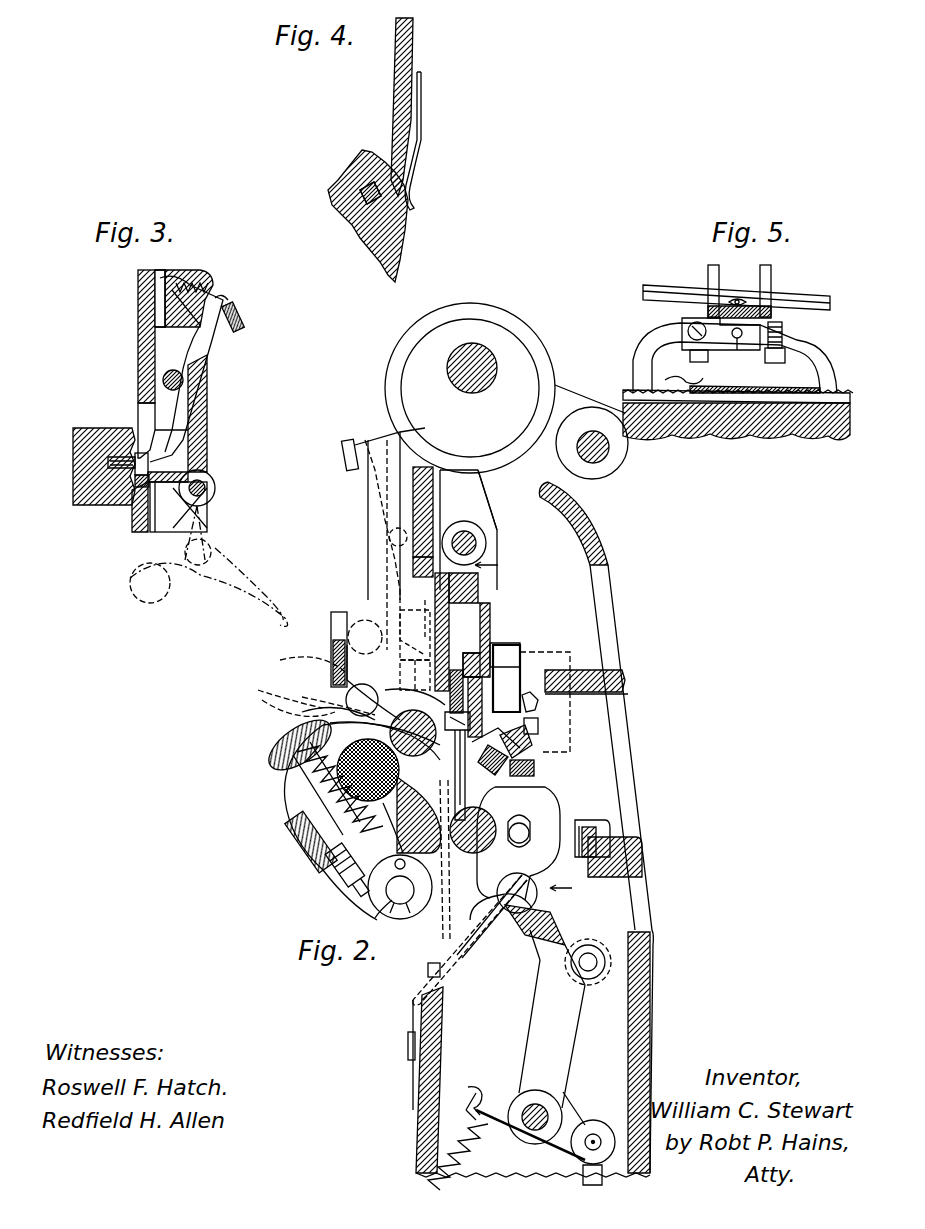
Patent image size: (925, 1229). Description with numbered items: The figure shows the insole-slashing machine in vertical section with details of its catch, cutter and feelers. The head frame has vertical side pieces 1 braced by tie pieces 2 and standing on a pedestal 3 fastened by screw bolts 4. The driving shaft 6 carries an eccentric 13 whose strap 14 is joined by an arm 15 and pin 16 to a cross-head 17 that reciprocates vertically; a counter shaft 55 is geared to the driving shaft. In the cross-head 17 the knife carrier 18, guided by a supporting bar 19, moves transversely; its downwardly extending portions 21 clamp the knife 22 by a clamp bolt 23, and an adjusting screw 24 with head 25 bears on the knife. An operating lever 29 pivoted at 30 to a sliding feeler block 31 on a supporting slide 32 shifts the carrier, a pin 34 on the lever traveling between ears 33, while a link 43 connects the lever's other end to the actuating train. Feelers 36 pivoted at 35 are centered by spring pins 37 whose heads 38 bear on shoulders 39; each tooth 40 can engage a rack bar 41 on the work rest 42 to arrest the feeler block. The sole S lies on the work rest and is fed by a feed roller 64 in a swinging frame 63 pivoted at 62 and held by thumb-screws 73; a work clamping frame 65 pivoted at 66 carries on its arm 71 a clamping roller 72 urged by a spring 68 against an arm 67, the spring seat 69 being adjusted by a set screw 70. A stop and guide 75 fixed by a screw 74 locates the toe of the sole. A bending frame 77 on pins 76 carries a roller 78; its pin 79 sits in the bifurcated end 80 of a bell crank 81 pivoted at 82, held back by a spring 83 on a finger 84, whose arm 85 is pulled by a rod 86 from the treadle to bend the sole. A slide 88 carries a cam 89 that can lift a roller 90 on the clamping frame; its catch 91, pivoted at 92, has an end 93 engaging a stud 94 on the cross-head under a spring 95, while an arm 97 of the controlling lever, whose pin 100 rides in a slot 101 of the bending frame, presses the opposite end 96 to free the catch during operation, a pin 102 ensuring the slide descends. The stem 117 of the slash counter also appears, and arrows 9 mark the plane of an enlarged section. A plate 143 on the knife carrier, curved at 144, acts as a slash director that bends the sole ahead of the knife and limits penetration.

In FIG. 2, the side pieces 1 is at (583, 612).
In FIG. 2, the tie pieces 2 is at (640, 700).
In FIG. 2, the pedestal 3 is at (650, 1035).
In FIG. 2, the screw bolts 4 is at (428, 972).
In FIG. 2, the main driving shaft 6 is at (472, 347).
In FIG. 2, the rollers 9 is at (531, 725).
In FIG. 2, the eccentric 13 is at (518, 355).
In FIG. 2, the eccentric strap 14 is at (548, 310).
In FIG. 2, the arm 15 is at (468, 530).
In FIG. 2, the pin 16 is at (476, 543).
In FIG. 3, the cross-head 17 is at (95, 505).
In FIG. 2, the cross-head 17 is at (455, 600).
In FIG. 2, the knife carrier 18 is at (470, 640).
In FIG. 2, the guiding and supporting bar 19 is at (475, 660).
In FIG. 2, the downwardly extending portions 21 is at (520, 650).
In FIG. 4, the knife 22 is at (396, 80).
In FIG. 2, the knife 22 is at (330, 726).
In FIG. 2, the clamp bolt 23 is at (531, 698).
In FIG. 2, the adjusting screw 24 is at (445, 718).
In FIG. 2, the head 25 is at (320, 694).
In FIG. 2, the operating lever 29 is at (605, 701).
In FIG. 2, the pivot 30 is at (534, 768).
In FIG. 5, the sliding feeler block 31 is at (732, 300).
In FIG. 2, the sliding feeler block 31 is at (508, 762).
In FIG. 5, the supporting slide 32 is at (805, 300).
In FIG. 2, the supporting slide 32 is at (532, 742).
In FIG. 5, the ears 33 is at (788, 262).
In FIG. 2, the ears 33 is at (538, 704).
In FIG. 2, the pin 34 is at (538, 726).
In FIG. 5, the pivotal connection 35 is at (737, 350).
In FIG. 5, the feelers 36 is at (845, 352).
In FIG. 5, the spring controlled pins 37 is at (782, 338).
In FIG. 5, the heads 38 is at (835, 312).
In FIG. 5, the shoulders 39 is at (688, 331).
In FIG. 5, the tooth 40 is at (633, 388).
In FIG. 4, the rack bar 41 is at (360, 198).
In FIG. 5, the rack bar 41 is at (820, 432).
In FIG. 4, the work rest 42 is at (337, 186).
In FIG. 5, the work rest 42 is at (735, 430).
In FIG. 2, the work rest 42 is at (397, 828).
In FIG. 2, the link 43 is at (596, 858).
In FIG. 2, the counter shaft 55 is at (605, 450).
In FIG. 2, the pivot 62 is at (385, 915).
In FIG. 2, the feed roller frame 63 is at (290, 775).
In FIG. 2, the feed roller 64 is at (355, 800).
In FIG. 2, the work clamping frame 65 is at (333, 648).
In FIG. 3, the pivot 66 is at (205, 550).
In FIG. 2, the pivot 66 is at (331, 646).
In FIG. 3, the arm 67 is at (265, 600).
In FIG. 2, the arm 67 is at (300, 714).
In FIG. 2, the spring 68 is at (300, 790).
In FIG. 2, the seat 69 is at (312, 855).
In FIG. 2, the set screw 70 is at (335, 870).
In FIG. 2, the arm 71 is at (359, 678).
In FIG. 3, the work-clamping roller 72 is at (140, 598).
In FIG. 2, the work-clamping roller 72 is at (348, 704).
In FIG. 2, the thumb-screws 73 is at (335, 612).
In FIG. 2, the screw 74 is at (408, 1050).
In FIG. 2, the stationary stop and guide 75 is at (465, 965).
In FIG. 2, the pins 76 is at (512, 918).
In FIG. 2, the work deflecting or bending frame 77 is at (497, 900).
In FIG. 2, the work engaging roller 78 is at (470, 855).
In FIG. 2, the pin 79 is at (615, 952).
In FIG. 2, the bifurcated end 80 is at (572, 1003).
In FIG. 2, the bell crank lever 81 is at (560, 1050).
In FIG. 2, the pivot 82 is at (525, 1100).
In FIG. 2, the spring 83 is at (458, 1130).
In FIG. 2, the finger 84 is at (468, 1095).
In FIG. 2, the arm 85 is at (600, 1100).
In FIG. 2, the rod 86 is at (583, 1170).
In FIG. 3, the slide 88 is at (207, 390).
In FIG. 2, the slide 88 is at (400, 508).
In FIG. 3, the cam 89 is at (175, 515).
In FIG. 2, the cam 89 is at (398, 662).
In FIG. 3, the roller 90 is at (215, 485).
In FIG. 2, the roller 90 is at (392, 545).
In FIG. 3, the catch 91 is at (208, 340).
In FIG. 2, the catch 91 is at (365, 478).
In FIG. 3, the pivot 92 is at (163, 380).
In FIG. 3, the end 93 is at (152, 452).
In FIG. 2, the end 93 is at (405, 612).
In FIG. 3, the stud 94 is at (140, 453).
In FIG. 2, the stud 94 is at (417, 616).
In FIG. 3, the spring 95 is at (200, 300).
In FIG. 3, the end 96 is at (228, 300).
In FIG. 3, the arm 97 is at (245, 312).
In FIG. 2, the arm 97 is at (350, 440).
In FIG. 2, the pin 100 is at (529, 833).
In FIG. 2, the slot 101 is at (519, 822).
In FIG. 3, the pin 102 is at (135, 500).
In FIG. 2, the stem 117 is at (490, 515).
In FIG. 4, the plate 143 is at (421, 110).
In FIG. 4, the curved portion 144 is at (412, 192).
In FIG. 4, the sole S is at (410, 240).
In FIG. 5, the sole S is at (684, 381).
In FIG. 2, the sole S is at (290, 692).